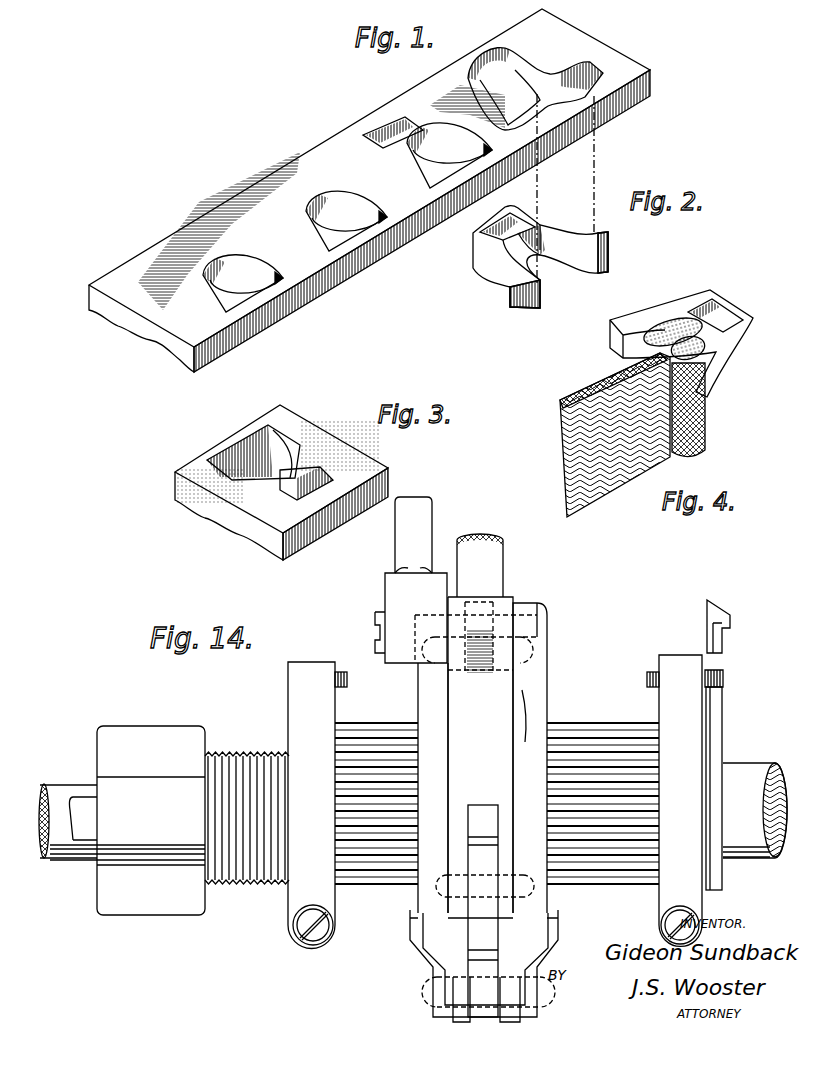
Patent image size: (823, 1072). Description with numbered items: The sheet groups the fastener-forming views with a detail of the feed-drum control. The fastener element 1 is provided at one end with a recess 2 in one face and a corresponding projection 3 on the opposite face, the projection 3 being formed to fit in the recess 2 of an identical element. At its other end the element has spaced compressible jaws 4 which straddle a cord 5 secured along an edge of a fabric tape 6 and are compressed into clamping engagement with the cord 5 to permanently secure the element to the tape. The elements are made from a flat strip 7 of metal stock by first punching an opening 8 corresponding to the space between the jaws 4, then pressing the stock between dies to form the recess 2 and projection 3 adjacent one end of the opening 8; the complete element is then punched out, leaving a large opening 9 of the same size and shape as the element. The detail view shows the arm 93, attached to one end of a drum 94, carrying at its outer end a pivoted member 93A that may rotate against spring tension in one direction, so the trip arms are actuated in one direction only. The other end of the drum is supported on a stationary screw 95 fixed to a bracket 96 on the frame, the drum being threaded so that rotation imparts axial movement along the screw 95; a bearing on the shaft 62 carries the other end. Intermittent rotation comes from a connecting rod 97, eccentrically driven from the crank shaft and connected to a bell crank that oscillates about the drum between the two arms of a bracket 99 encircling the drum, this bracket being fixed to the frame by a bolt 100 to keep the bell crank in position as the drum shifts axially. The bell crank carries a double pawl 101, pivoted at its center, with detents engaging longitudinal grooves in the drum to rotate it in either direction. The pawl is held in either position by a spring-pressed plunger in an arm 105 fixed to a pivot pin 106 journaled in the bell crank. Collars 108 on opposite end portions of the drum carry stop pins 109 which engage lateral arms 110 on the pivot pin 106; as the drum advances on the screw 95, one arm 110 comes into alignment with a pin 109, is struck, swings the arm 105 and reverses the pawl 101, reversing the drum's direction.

In FIG. 2, the fastener element 1 is at (538, 226).
In FIG. 4, the fastener element 1 is at (735, 348).
In FIG. 1, the recess 2 is at (369, 125).
In FIG. 2, the recess 2 is at (495, 245).
In FIG. 4, the recess 2 is at (723, 312).
In FIG. 3, the projection 3 is at (292, 485).
In FIG. 2, the compressible jaws 4 is at (607, 229).
In FIG. 4, the compressible jaws 4 is at (647, 320).
In FIG. 4, the cord 5 is at (702, 433).
In FIG. 4, the fabric tape 6 is at (605, 377).
In FIG. 1, the flat strip 7 is at (325, 289).
In FIG. 1, the opening 8 is at (248, 269).
In FIG. 1, the large opening 9 is at (522, 88).
In FIG. 14, the shaft 62 is at (752, 768).
In FIG. 14, the arm 93 is at (722, 702).
In FIG. 14, the member 93A is at (722, 612).
In FIG. 14, the drum 94 is at (588, 726).
In FIG. 14, the stationary screw 95 is at (263, 885).
In FIG. 14, the bracket 96 is at (148, 905).
In FIG. 14, the connecting rod 97 is at (395, 537).
In FIG. 14, the bracket 99 is at (540, 672).
In FIG. 14, the bolt 100 is at (487, 563).
In FIG. 14, the double pawl 101 is at (487, 840).
In FIG. 14, the arm 105 is at (485, 1020).
In FIG. 14, the pivot pin 106 is at (433, 990).
In FIG. 14, the collars 108 is at (307, 893).
In FIG. 14, the stop pins 109 is at (347, 680).
In FIG. 14, the lateral arms 110 is at (425, 957).